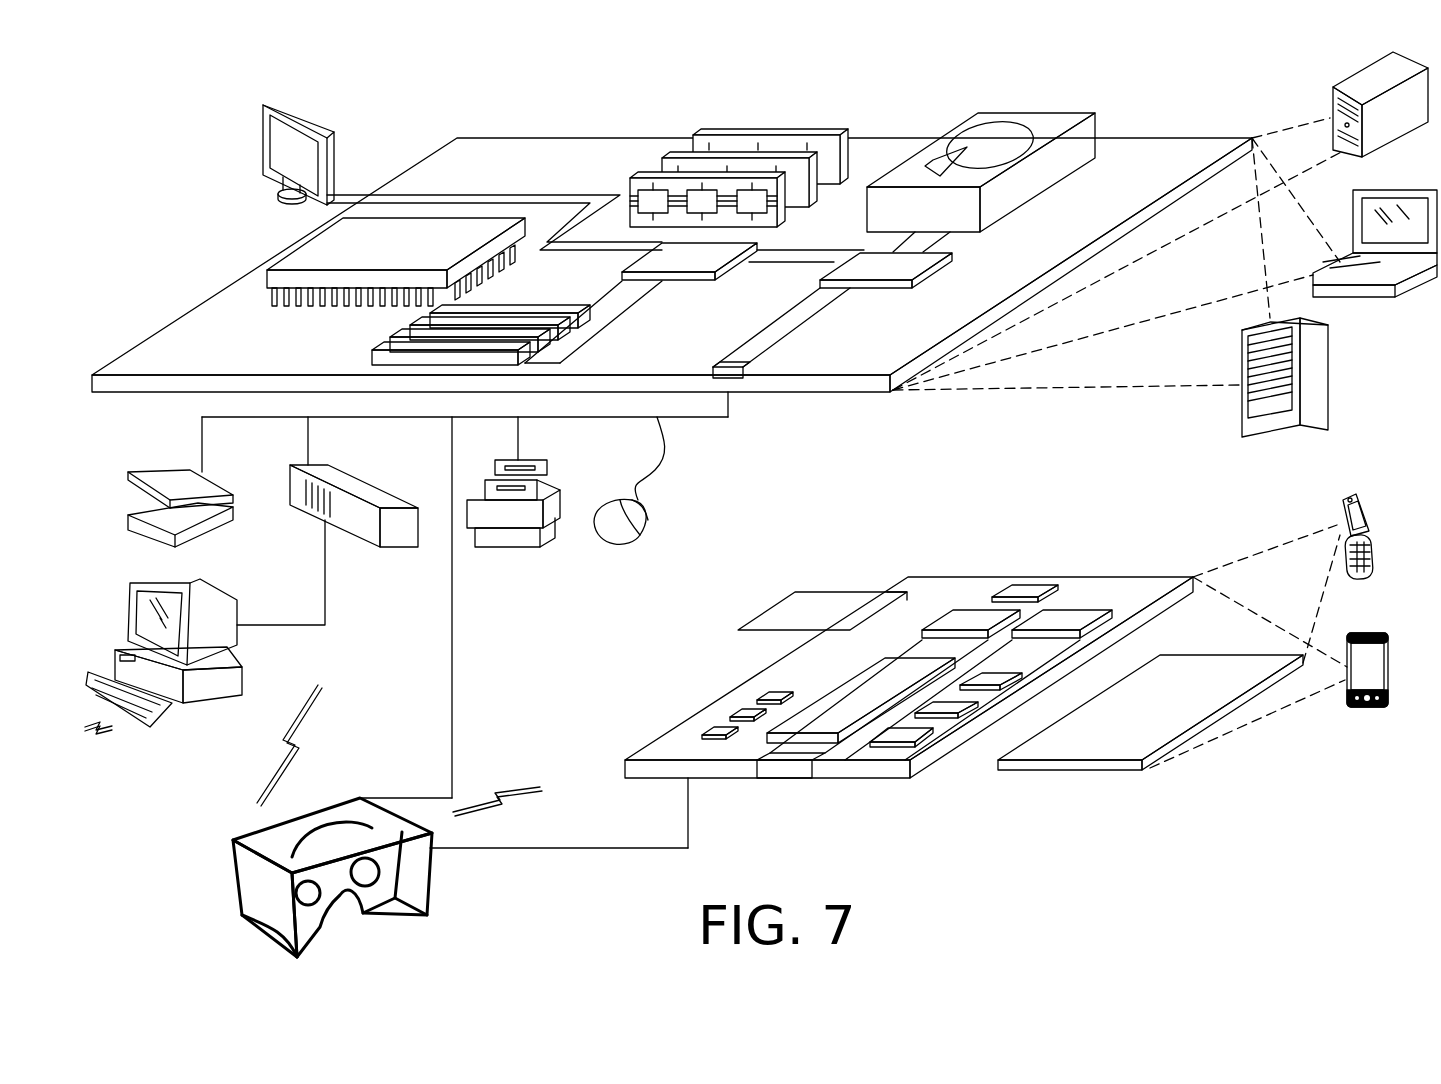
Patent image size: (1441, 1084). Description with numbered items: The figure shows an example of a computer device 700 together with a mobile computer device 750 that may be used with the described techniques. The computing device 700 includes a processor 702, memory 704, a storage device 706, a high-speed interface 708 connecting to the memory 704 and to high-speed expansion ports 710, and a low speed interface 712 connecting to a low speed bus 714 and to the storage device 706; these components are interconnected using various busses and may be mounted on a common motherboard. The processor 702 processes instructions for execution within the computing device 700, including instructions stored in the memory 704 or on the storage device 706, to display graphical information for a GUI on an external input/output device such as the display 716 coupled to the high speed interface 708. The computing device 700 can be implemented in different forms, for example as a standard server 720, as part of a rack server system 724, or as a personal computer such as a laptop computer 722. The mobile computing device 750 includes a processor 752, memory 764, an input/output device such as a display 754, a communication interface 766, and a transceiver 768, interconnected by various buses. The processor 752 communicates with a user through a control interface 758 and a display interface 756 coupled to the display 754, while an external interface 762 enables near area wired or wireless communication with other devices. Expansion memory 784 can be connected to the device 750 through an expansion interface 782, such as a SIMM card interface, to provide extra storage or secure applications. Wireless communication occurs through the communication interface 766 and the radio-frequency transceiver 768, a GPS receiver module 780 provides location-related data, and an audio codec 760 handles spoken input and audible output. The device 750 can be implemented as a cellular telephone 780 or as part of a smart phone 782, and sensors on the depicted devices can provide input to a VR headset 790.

The computing device 700 is at (398, 82).
The processor 702 is at (292, 250).
The memory 704 is at (776, 130).
The storage device 706 is at (1026, 112).
The high-speed interface 708 is at (702, 256).
The high-speed expansion ports 710 is at (396, 336).
The low speed interface 712 is at (856, 262).
The low speed bus 714 is at (736, 360).
The display 716 is at (268, 106).
The standard server 720 is at (1356, 80).
The laptop computer 722 is at (1414, 190).
The rack server system 724 is at (1330, 378).
The mobile computing device 750 is at (1240, 772).
The processor 752 is at (828, 706).
The display 754 is at (1194, 672).
The display interface 756 is at (912, 737).
The control interface 758 is at (955, 708).
The audio codec 760 is at (995, 672).
The external interface 762 is at (785, 762).
The memory 764 is at (736, 712).
The communication interface 766 is at (970, 613).
The transceiver 768 is at (1070, 613).
The cellular telephone 780 is at (1025, 587).
The smart phone 782 is at (890, 590).
The expansion memory 784 is at (801, 590).
The VR headset 790 is at (446, 863).